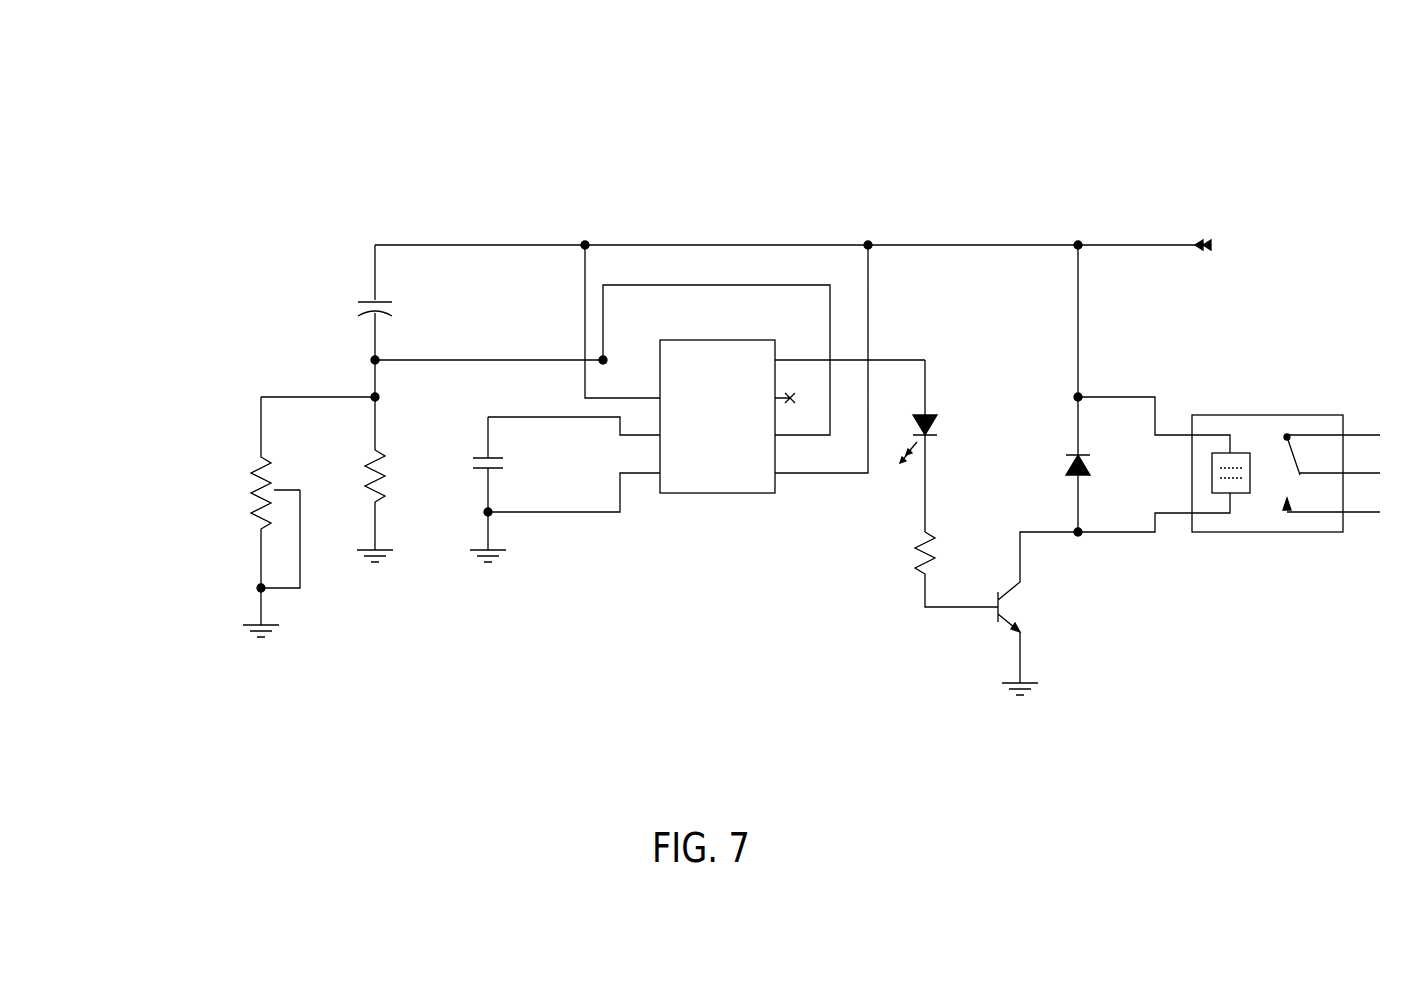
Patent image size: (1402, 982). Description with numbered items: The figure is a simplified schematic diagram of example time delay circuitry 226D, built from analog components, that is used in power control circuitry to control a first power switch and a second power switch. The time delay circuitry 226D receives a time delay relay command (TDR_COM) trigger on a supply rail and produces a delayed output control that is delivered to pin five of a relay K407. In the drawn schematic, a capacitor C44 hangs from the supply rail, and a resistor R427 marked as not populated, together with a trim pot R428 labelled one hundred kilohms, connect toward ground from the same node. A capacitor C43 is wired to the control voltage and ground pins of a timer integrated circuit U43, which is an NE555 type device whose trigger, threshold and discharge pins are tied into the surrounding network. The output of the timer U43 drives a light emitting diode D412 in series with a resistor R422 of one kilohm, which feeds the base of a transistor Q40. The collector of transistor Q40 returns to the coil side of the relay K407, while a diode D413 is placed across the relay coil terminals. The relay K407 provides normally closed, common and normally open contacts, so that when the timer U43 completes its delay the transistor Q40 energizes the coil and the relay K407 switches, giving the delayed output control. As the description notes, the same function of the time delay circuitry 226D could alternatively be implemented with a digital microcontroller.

The time delay circuitry 226D is at (706, 89).
The capacitor 100uF/50V C44 is at (434, 311).
The resistor DNP R427 is at (398, 479).
The trim pot 100k R428 is at (192, 517).
The capacitor 200pF/50V C43 is at (565, 489).
The NE555DR timer IC U43 is at (755, 386).
The green LED D412 is at (965, 446).
The resistor 1K R422 is at (935, 563).
The transistor MMBT3904 Q40 is at (1069, 613).
The diode 1N4148 D413 is at (1129, 390).
The relay K407 is at (1286, 482).